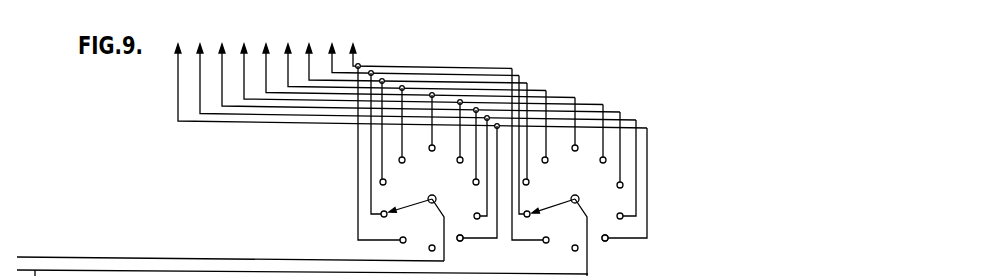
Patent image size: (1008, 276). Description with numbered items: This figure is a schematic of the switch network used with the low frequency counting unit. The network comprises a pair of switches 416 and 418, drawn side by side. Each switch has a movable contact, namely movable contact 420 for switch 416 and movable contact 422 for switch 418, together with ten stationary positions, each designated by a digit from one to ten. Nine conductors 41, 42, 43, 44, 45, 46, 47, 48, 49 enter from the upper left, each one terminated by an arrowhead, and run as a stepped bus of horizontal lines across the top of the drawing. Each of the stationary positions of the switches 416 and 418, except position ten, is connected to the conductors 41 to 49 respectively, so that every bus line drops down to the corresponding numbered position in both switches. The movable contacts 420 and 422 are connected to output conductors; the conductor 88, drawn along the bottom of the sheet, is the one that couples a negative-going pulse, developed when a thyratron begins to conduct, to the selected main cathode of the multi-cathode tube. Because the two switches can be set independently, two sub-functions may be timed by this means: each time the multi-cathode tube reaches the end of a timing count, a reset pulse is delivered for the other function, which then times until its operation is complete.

The conductor 41 is at (353, 60).
The conductor 42 is at (332, 60).
The conductor 43 is at (309, 60).
The conductor 44 is at (288, 60).
The conductor 45 is at (266, 60).
The conductor 46 is at (244, 60).
The conductor 47 is at (222, 60).
The conductor 48 is at (200, 60).
The conductor 49 is at (178, 60).
The conductor 88 is at (38, 257).
The switch 416 is at (463, 240).
The switch 418 is at (608, 240).
The movable contact 420 is at (412, 204).
The movable contact 422 is at (555, 204).